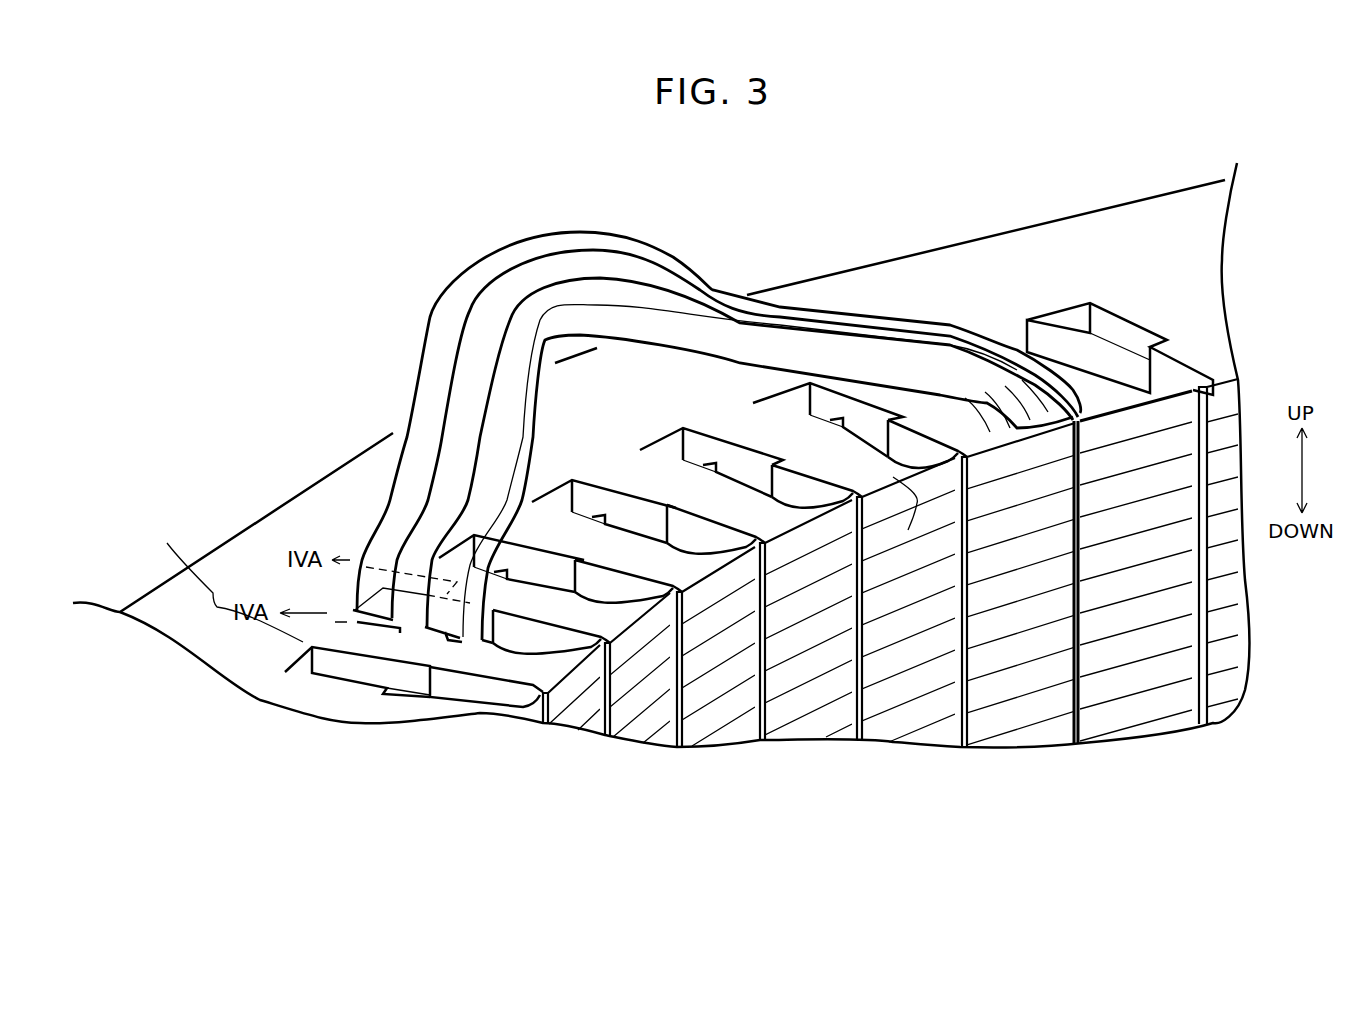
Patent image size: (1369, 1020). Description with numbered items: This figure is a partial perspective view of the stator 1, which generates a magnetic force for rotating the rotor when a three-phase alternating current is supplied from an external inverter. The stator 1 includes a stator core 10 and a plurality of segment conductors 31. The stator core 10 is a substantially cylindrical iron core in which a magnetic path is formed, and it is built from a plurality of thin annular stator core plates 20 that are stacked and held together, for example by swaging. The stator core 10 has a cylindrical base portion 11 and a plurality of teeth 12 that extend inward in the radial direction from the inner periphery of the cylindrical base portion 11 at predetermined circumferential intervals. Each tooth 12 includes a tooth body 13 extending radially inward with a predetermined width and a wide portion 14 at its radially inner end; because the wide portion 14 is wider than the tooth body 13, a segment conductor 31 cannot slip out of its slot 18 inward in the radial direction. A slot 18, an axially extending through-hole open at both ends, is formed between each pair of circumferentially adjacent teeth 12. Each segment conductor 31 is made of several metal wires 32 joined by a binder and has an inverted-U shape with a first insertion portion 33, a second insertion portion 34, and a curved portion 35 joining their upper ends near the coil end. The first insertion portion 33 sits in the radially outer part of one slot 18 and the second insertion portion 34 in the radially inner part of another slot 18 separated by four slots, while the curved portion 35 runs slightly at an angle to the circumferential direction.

The stator 1 is at (290, 272).
The stator core 10 is at (240, 515).
The cylindrical base portion 11 is at (228, 580).
The tooth 12 is at (903, 723).
The tooth body 13 is at (783, 432).
The wide portion 14 is at (910, 515).
The slot 18 is at (665, 452).
The stator core plate 20 is at (942, 583).
The segment conductor 31 is at (523, 235).
The wire 32 is at (518, 377).
The first insertion portion 33 is at (350, 592).
The second insertion portion 34 is at (990, 335).
The curved portion 35 is at (673, 250).